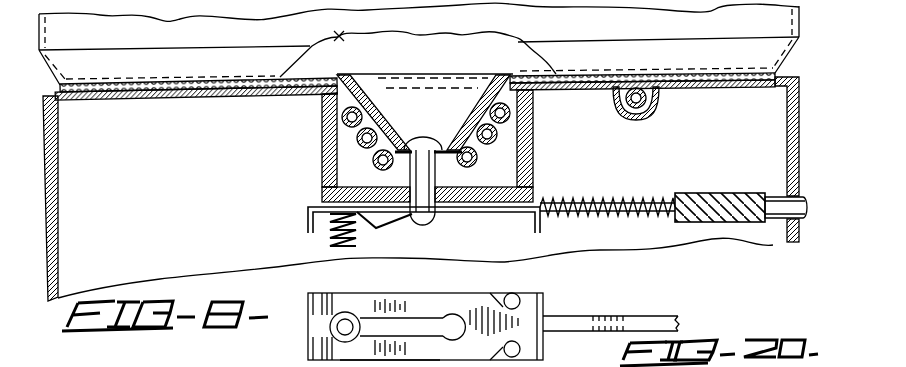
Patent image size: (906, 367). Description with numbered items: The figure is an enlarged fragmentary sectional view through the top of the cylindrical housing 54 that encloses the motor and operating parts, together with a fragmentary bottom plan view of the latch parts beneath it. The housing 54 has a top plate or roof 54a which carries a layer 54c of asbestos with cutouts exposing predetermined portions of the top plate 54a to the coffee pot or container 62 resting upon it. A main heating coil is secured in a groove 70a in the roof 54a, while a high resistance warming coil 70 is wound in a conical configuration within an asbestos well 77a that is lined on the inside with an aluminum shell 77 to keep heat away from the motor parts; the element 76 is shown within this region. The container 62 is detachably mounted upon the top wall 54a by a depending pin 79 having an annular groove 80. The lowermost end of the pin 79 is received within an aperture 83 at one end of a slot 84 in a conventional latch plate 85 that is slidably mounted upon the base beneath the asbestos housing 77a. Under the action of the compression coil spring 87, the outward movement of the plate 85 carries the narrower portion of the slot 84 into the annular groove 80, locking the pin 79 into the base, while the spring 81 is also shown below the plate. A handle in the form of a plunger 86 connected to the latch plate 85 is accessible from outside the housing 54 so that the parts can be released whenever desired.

In FIG. 8, the cylindrical housing 54 is at (61, 197).
In FIG. 8, the top plate 54a is at (131, 97).
In FIG. 8, the layer of asbestos 54c is at (641, 74).
In FIG. 8, the container 62 is at (445, 52).
In FIG. 8, the funnel 76 is at (437, 103).
In FIG. 8, the aluminum shell 77 is at (507, 136).
In FIG. 8, the asbestos well 77a is at (531, 116).
In FIG. 8, the depending pin 79 is at (463, 192).
In FIG. 8, the warming coil 70 is at (488, 144).
In FIG. 8, the groove 70a is at (650, 112).
In FIG. 8, the annular groove 80 is at (418, 226).
In FIG. 8, the spring 81 is at (388, 218).
In FIG. 8, the latch plate 85 is at (512, 213).
In FIG. 20, the latch plate 85 is at (443, 350).
In FIG. 8, the compression coil spring 87 is at (587, 198).
In FIG. 8, the plunger 86 is at (774, 220).
In FIG. 20, the plunger 86 is at (653, 312).
In FIG. 20, the slot 84 is at (400, 317).
In FIG. 20, the aperture 83 is at (455, 327).